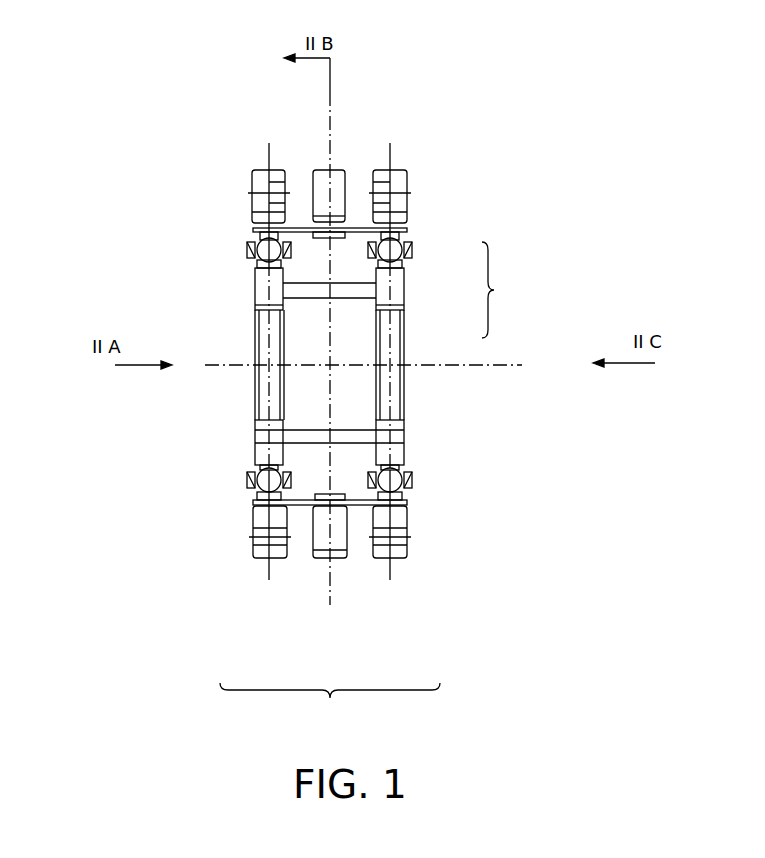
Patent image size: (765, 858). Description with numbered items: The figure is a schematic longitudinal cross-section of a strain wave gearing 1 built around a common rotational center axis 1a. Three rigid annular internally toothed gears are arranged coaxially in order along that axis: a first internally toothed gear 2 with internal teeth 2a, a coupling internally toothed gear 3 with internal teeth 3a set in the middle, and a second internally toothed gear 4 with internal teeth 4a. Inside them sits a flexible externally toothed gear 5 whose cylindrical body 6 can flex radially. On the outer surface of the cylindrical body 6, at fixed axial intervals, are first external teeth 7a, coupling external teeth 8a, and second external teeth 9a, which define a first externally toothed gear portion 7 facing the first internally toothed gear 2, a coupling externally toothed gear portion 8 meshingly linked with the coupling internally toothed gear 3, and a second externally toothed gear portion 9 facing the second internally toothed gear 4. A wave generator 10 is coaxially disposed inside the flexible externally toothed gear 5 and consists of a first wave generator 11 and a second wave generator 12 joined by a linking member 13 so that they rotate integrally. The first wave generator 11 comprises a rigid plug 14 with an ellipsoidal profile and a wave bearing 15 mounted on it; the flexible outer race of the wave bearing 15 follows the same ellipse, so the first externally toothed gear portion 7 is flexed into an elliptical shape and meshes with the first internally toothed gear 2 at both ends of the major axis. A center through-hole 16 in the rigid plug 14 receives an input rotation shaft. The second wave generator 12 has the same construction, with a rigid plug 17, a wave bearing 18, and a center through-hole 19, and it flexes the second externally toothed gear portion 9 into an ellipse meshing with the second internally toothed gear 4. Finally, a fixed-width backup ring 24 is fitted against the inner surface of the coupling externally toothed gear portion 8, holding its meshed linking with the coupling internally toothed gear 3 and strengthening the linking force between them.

The strain wave gearing 1 is at (387, 75).
The rotational center axis 1a is at (467, 365).
The first internally toothed gear 2 is at (255, 165).
The internal teeth 2a is at (266, 232).
The coupling internally toothed gear 3 is at (320, 165).
The internal teeth 3a is at (343, 232).
The second internally toothed gear 4 is at (400, 165).
The internal teeth 4a is at (405, 232).
The flexible externally toothed gear 5 is at (330, 596).
The cylindrical body 6 is at (297, 514).
The first externally toothed gear portion 7 is at (266, 516).
The first external teeth 7a is at (265, 503).
The coupling externally toothed gear portion 8 is at (337, 516).
The coupling external teeth 8a is at (320, 505).
The second externally toothed gear portion 9 is at (397, 516).
The second external teeth 9a is at (395, 503).
The wave generator 10 is at (503, 290).
The first wave generator 11 is at (293, 318).
The second wave generator 12 is at (413, 327).
The linking member 13 is at (343, 284).
The rigid plug 14 is at (262, 455).
The wave bearing 15 is at (250, 480).
The center through-hole 16 is at (265, 390).
The rigid plug 17 is at (405, 445).
The wave bearing 18 is at (406, 480).
The center through-hole 19 is at (405, 390).
The backup ring 24 is at (316, 248).